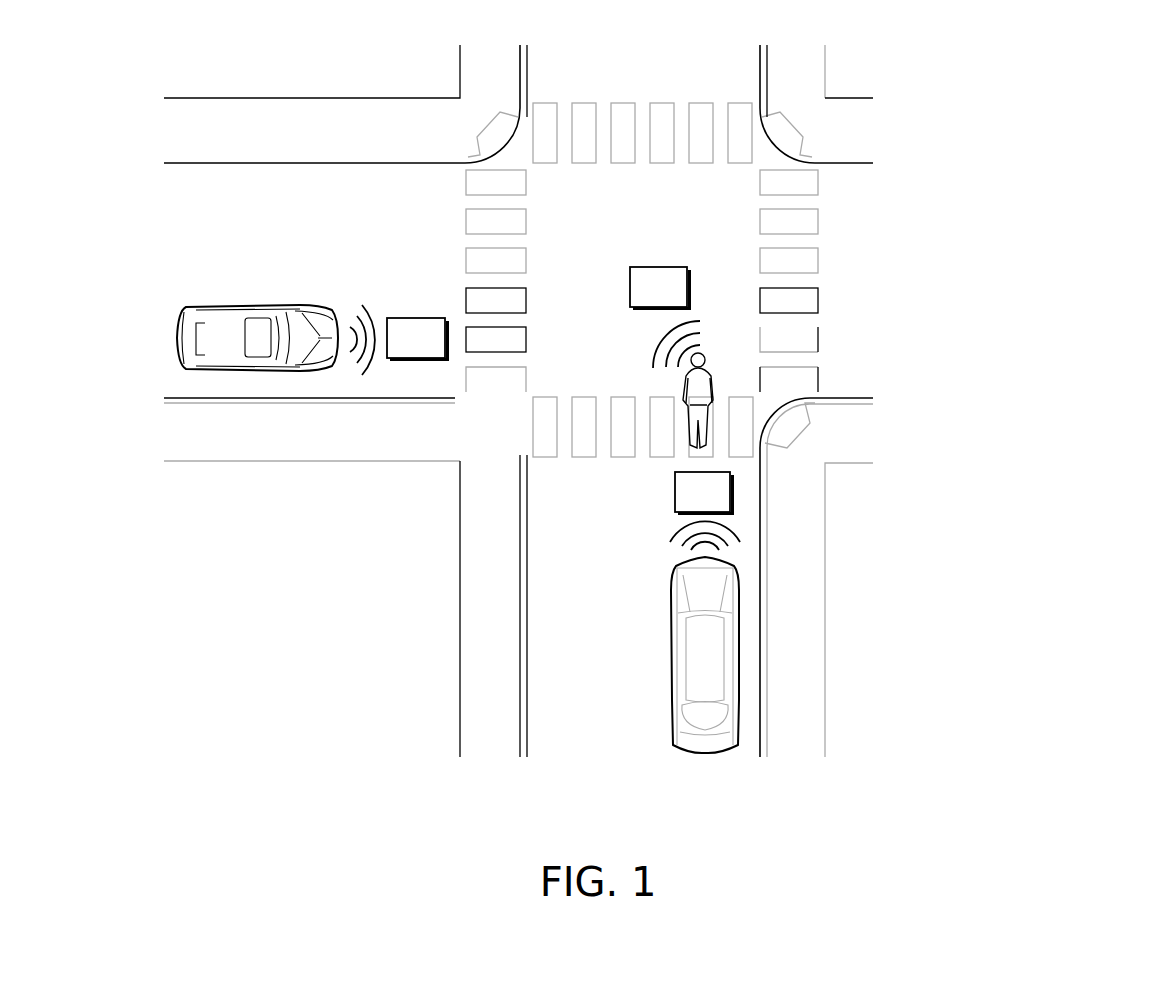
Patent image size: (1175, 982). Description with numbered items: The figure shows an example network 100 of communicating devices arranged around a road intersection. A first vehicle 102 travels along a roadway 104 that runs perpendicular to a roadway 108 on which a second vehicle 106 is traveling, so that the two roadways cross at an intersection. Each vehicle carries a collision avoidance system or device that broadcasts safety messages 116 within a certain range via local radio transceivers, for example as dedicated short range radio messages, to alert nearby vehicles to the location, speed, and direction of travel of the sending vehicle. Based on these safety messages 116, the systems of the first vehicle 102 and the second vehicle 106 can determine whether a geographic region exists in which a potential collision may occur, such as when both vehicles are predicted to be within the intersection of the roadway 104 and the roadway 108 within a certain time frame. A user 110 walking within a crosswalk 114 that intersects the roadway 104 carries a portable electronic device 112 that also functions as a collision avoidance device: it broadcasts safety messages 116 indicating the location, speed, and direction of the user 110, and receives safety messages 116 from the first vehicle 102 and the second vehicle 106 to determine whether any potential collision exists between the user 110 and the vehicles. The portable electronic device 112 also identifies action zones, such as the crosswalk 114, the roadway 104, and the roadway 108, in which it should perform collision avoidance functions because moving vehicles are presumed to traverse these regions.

The network 100 is at (1093, 108).
The first vehicle 102 is at (668, 618).
The roadway 104 is at (753, 775).
The second vehicle 106 is at (255, 304).
The roadway 108 is at (145, 170).
The user 110 is at (684, 416).
The portable electronic device 112 is at (709, 355).
The crosswalk 114 is at (520, 400).
The safety messages 116 is at (401, 350).